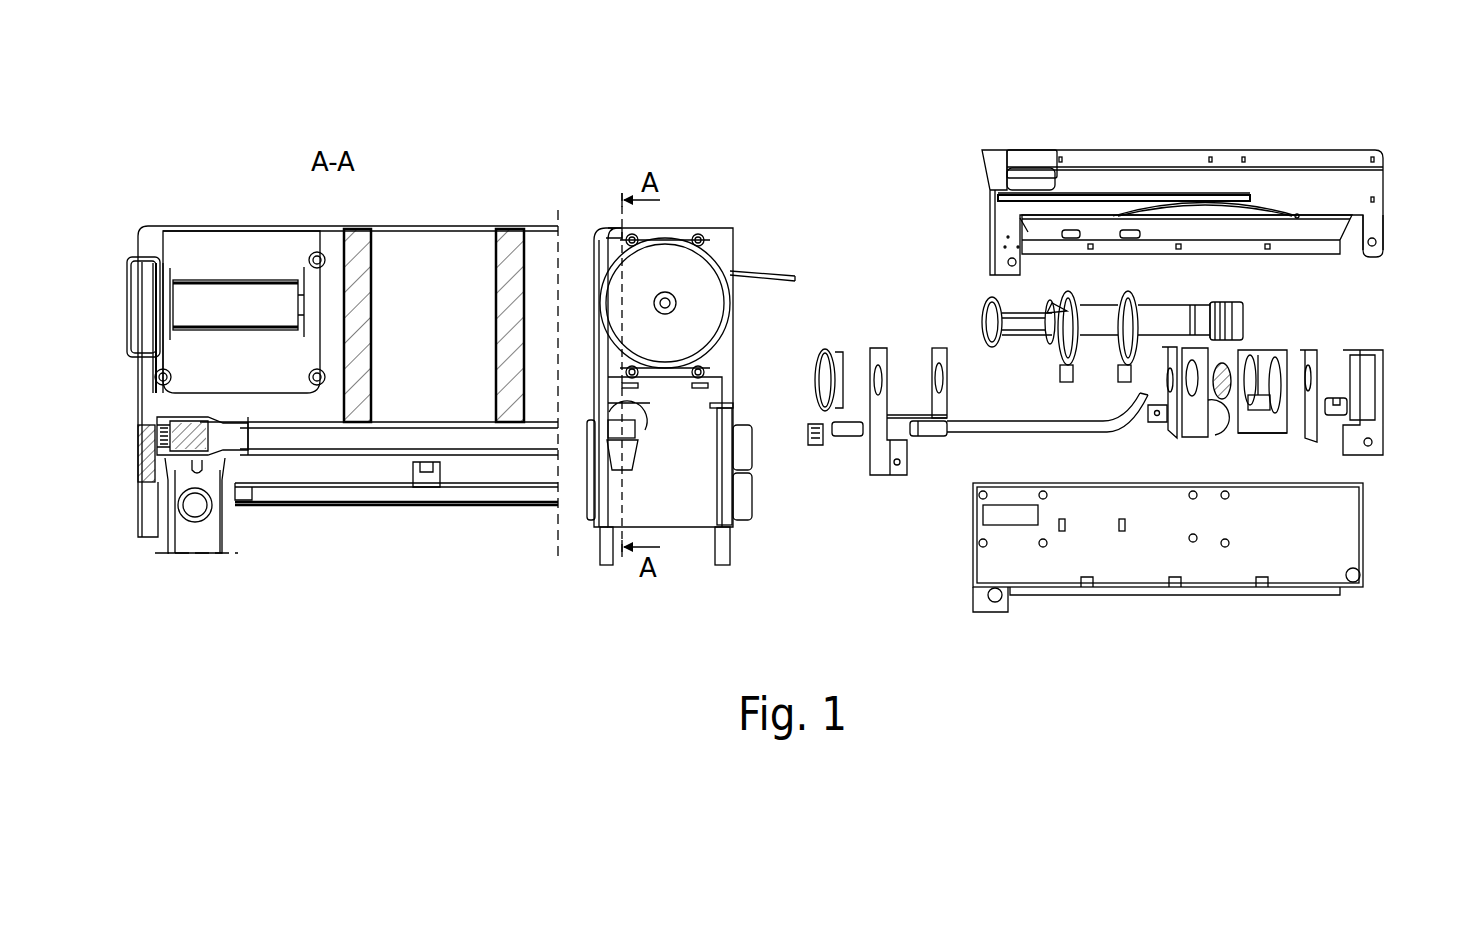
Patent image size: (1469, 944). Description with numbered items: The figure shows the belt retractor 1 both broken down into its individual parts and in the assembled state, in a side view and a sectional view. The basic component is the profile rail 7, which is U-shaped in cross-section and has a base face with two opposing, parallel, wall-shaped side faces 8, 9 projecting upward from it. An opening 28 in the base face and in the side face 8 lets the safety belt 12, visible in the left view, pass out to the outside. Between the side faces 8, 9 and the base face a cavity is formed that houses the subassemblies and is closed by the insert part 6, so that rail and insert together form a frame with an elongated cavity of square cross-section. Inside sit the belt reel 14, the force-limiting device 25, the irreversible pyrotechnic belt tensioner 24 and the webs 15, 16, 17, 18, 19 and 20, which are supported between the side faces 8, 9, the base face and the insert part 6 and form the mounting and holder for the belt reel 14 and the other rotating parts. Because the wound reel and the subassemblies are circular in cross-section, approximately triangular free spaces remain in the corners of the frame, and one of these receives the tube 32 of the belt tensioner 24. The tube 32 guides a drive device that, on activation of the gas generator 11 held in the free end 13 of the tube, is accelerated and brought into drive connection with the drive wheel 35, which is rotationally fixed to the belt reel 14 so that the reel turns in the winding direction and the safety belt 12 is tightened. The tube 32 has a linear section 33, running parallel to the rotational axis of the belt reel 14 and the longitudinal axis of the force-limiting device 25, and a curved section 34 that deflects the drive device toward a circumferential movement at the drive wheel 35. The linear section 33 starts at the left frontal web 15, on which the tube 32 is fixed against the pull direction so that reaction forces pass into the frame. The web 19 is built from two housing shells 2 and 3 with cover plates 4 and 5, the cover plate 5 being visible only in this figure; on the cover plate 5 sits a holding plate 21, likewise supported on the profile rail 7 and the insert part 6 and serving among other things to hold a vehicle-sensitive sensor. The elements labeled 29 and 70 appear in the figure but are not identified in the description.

The belt retractor 1 is at (505, 210).
The housing shell 2 is at (1193, 427).
The housing shell 3 is at (1260, 350).
The cover plate 4 is at (1167, 413).
The cover plate 5 is at (1272, 433).
The insert part 6 is at (1223, 577).
The profile rail 7 is at (1143, 187).
The side face 8 is at (1327, 233).
The side face 9 is at (1257, 148).
The gas generator 11 is at (855, 433).
The safety belt 12 is at (767, 270).
The free end of the tube 13 is at (933, 432).
The belt reel 14 is at (1033, 328).
The web 15 is at (872, 348).
The web 16 is at (935, 348).
The web 17 is at (1055, 302).
The web 18 is at (1123, 380).
The web 19 is at (1240, 440).
The web 20 is at (1385, 370).
The holding plate 21 is at (1302, 435).
The irreversible belt tensioner 24 is at (1213, 302).
The force-limiting device 25 is at (1102, 317).
The opening 28 is at (1035, 160).
The tab 29 is at (1147, 420).
The tube 32 is at (977, 443).
The linear section 33 is at (993, 424).
The curved section 34 is at (1093, 428).
The drive wheel 35 is at (1237, 352).
The slot 70 is at (1323, 195).